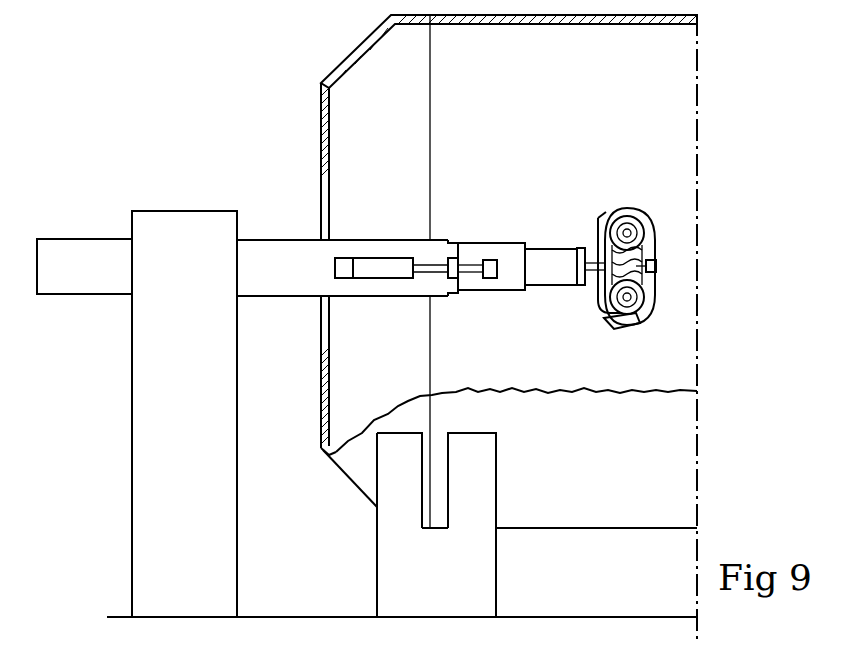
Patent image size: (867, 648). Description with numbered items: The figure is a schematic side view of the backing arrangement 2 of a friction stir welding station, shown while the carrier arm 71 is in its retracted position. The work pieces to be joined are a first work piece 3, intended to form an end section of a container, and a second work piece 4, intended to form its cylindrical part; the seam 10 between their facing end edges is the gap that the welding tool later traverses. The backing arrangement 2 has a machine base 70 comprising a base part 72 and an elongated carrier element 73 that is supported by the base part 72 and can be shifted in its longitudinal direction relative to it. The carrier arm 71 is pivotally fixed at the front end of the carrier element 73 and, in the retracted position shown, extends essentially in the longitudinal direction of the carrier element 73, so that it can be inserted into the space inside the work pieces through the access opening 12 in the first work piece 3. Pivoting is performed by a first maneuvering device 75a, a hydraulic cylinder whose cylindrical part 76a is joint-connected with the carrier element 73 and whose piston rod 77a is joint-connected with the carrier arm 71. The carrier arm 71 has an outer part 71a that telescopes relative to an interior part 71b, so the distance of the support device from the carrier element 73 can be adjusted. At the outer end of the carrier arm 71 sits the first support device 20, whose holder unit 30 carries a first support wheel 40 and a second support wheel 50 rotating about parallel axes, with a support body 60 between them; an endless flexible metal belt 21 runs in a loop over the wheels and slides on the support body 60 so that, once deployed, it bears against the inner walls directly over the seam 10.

The backing arrangement 2 is at (525, 245).
The first work piece 3 is at (321, 108).
The second work piece 4 is at (570, 23).
The seam 10 is at (432, 93).
The access opening 12 is at (321, 330).
The first support device 20 is at (640, 255).
The endless flexible metal belt 21 is at (646, 250).
The holder unit 30 is at (592, 315).
The first support wheel 40 is at (627, 212).
The second support wheel 50 is at (633, 321).
The support body 60 is at (653, 268).
The machine base 70 is at (247, 363).
The carrier arm 71 is at (531, 263).
The outer part of carrier arm 71a is at (546, 285).
The interior part of carrier arm 71b is at (508, 278).
The base part 72 is at (170, 217).
The carrier element 73 is at (262, 285).
The first maneuvering device 75a is at (402, 250).
The cylindrical part 76a is at (372, 272).
The piston rod 77a is at (472, 268).